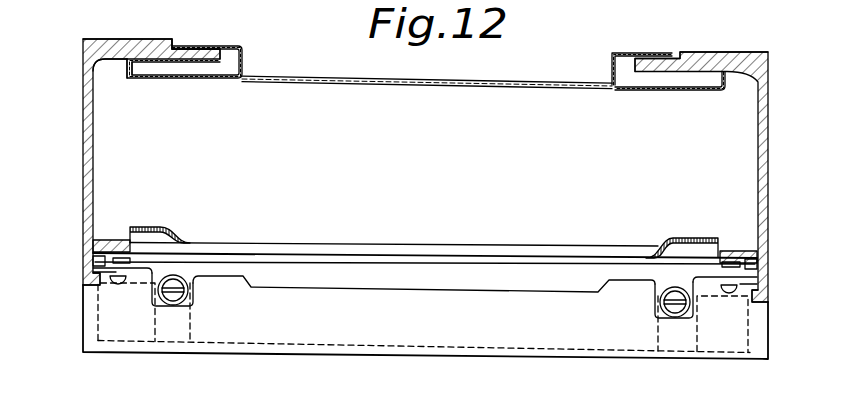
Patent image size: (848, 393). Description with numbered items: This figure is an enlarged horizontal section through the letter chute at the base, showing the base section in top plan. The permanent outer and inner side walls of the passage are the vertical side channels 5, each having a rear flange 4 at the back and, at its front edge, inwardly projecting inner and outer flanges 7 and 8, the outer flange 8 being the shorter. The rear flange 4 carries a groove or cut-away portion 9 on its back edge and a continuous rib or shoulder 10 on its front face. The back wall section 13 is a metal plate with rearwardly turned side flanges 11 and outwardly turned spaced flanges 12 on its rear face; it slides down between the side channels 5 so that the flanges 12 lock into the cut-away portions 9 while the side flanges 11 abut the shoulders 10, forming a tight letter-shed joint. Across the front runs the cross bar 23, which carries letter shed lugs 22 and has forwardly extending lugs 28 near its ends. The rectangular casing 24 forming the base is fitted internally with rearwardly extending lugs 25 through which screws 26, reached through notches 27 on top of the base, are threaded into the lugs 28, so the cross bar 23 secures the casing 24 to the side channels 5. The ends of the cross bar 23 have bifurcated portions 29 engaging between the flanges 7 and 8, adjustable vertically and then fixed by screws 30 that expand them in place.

The rear flange 4 is at (143, 40).
The vertical side channel 5 is at (83, 172).
The inner flange 7 is at (107, 241).
The outer flange 8 is at (95, 283).
The cut-away portion 9 is at (177, 46).
The rib 10 is at (128, 59).
The side flange 11 is at (133, 69).
The rear flange of back wall 12 is at (222, 46).
The back wall section 13 is at (417, 81).
The letter shed lug 22 is at (160, 228).
The cross bar 23 is at (387, 252).
The rectangular casing 24 is at (364, 353).
The rearwardly extending lug 25 is at (203, 332).
The screw 26 is at (173, 290).
The notch 27 is at (152, 297).
The forwardly extending lug 28 is at (198, 283).
The bifurcated portion 29 is at (96, 261).
The screw 30 is at (122, 282).